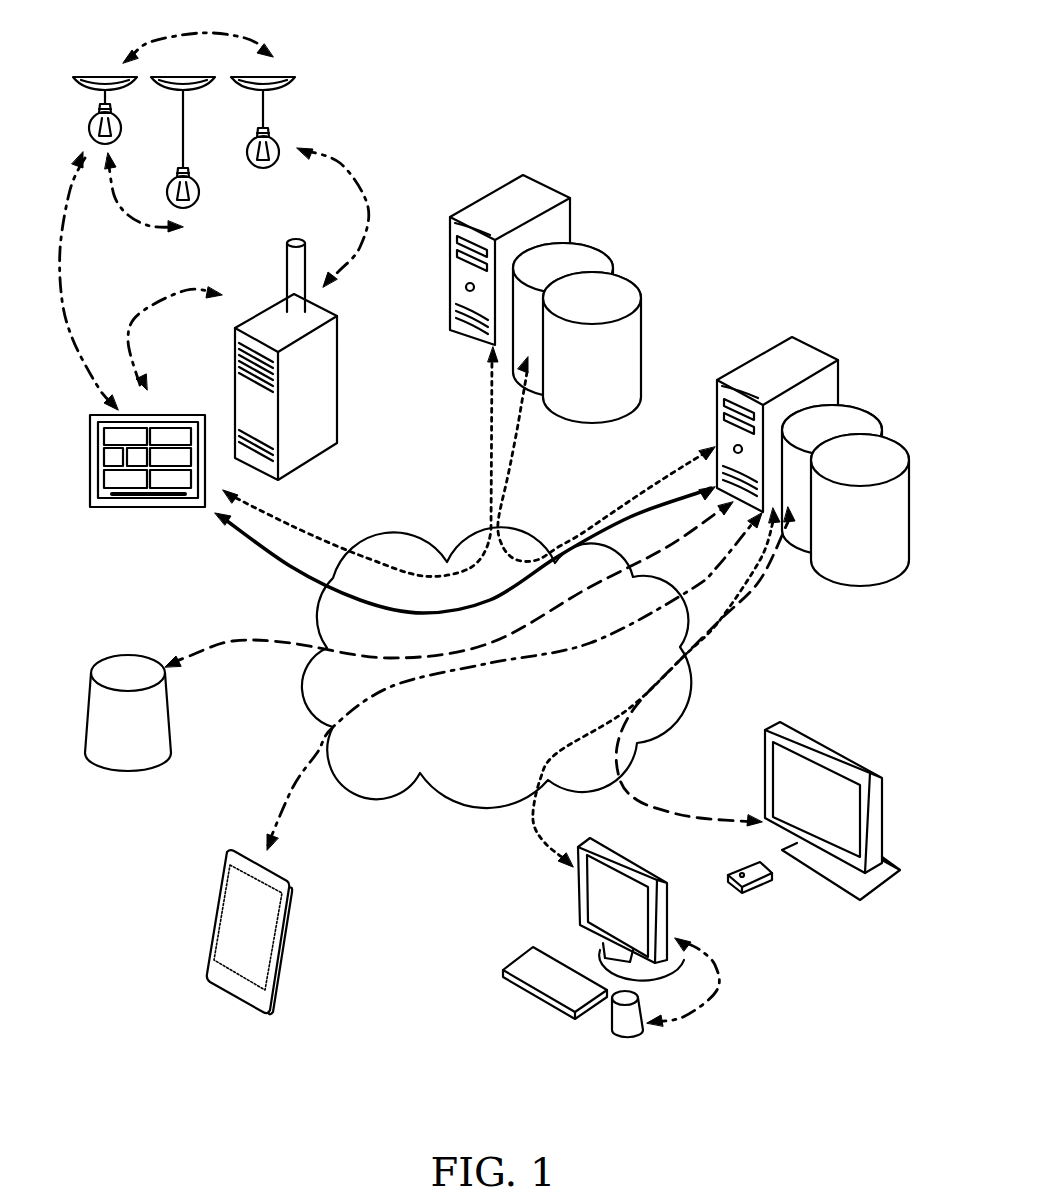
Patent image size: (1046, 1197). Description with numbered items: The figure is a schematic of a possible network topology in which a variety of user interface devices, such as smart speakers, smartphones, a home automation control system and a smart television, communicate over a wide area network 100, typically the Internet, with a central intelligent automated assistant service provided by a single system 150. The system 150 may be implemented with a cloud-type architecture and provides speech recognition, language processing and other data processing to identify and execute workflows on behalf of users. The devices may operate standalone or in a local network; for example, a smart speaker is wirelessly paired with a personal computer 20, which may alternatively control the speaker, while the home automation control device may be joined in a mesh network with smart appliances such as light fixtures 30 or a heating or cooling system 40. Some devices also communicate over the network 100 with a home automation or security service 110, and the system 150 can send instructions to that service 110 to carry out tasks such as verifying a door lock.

The personal computer 20 is at (593, 928).
The light fixtures 30 is at (286, 359).
The heating or cooling system 40 is at (293, 100).
The wide area network 100 is at (496, 667).
The home automation or security service 110 is at (545, 299).
The central intelligent automated assistant system 150 is at (813, 461).